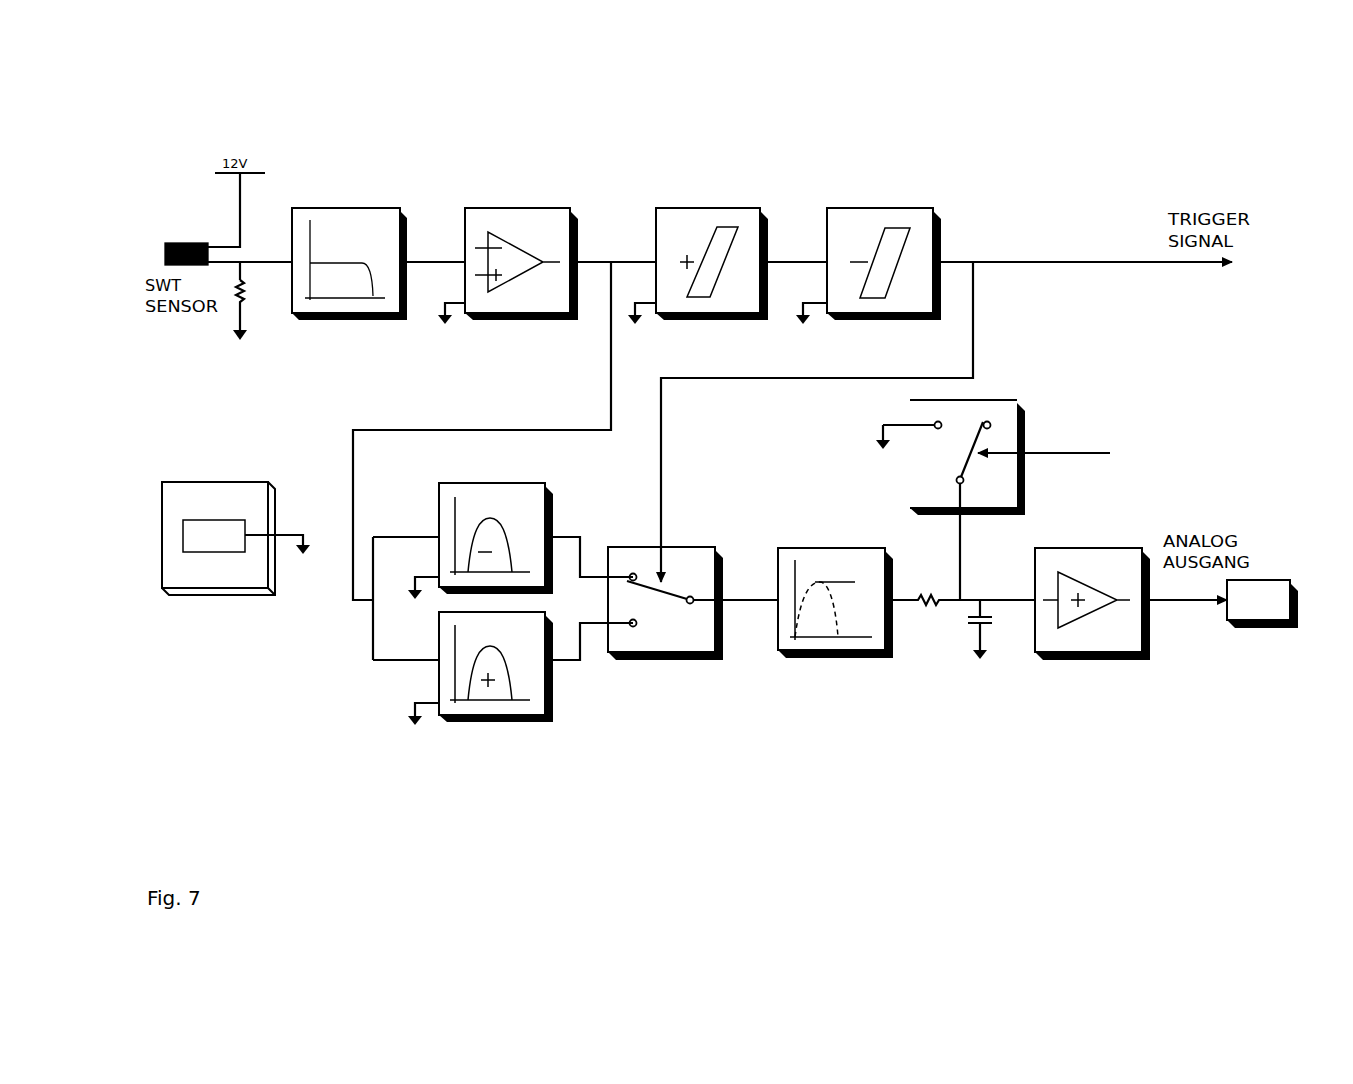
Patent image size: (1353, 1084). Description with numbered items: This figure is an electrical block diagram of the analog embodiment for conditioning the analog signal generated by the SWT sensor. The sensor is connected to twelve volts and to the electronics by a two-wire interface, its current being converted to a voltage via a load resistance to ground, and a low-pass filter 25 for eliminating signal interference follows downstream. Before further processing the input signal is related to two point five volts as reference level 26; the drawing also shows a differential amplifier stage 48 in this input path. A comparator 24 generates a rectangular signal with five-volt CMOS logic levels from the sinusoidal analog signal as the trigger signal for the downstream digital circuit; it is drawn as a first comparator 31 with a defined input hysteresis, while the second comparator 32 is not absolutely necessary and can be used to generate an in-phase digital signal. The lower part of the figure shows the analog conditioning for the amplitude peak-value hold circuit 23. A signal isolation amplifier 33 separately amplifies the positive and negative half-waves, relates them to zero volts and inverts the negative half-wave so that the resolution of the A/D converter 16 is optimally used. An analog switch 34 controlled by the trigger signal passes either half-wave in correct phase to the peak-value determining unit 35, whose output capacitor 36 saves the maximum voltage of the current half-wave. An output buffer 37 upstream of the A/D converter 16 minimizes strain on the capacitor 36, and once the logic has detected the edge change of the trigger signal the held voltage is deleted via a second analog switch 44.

The A/D converter 16 is at (1279, 585).
The hold circuit 23 is at (871, 630).
The comparator 24 is at (791, 219).
The low-pass filter 25 is at (330, 193).
The reference level 26 is at (222, 503).
The first comparator 31 is at (677, 225).
The second comparator 32 is at (875, 252).
The signal isolation amplifier 33 is at (533, 510).
The analog switch 34 is at (690, 567).
The peak-value determining unit 35 is at (810, 560).
The capacitor 36 is at (968, 625).
The output buffer 37 is at (1123, 632).
The second analog switch 44 is at (1017, 388).
The differential amplifier 48 is at (495, 200).